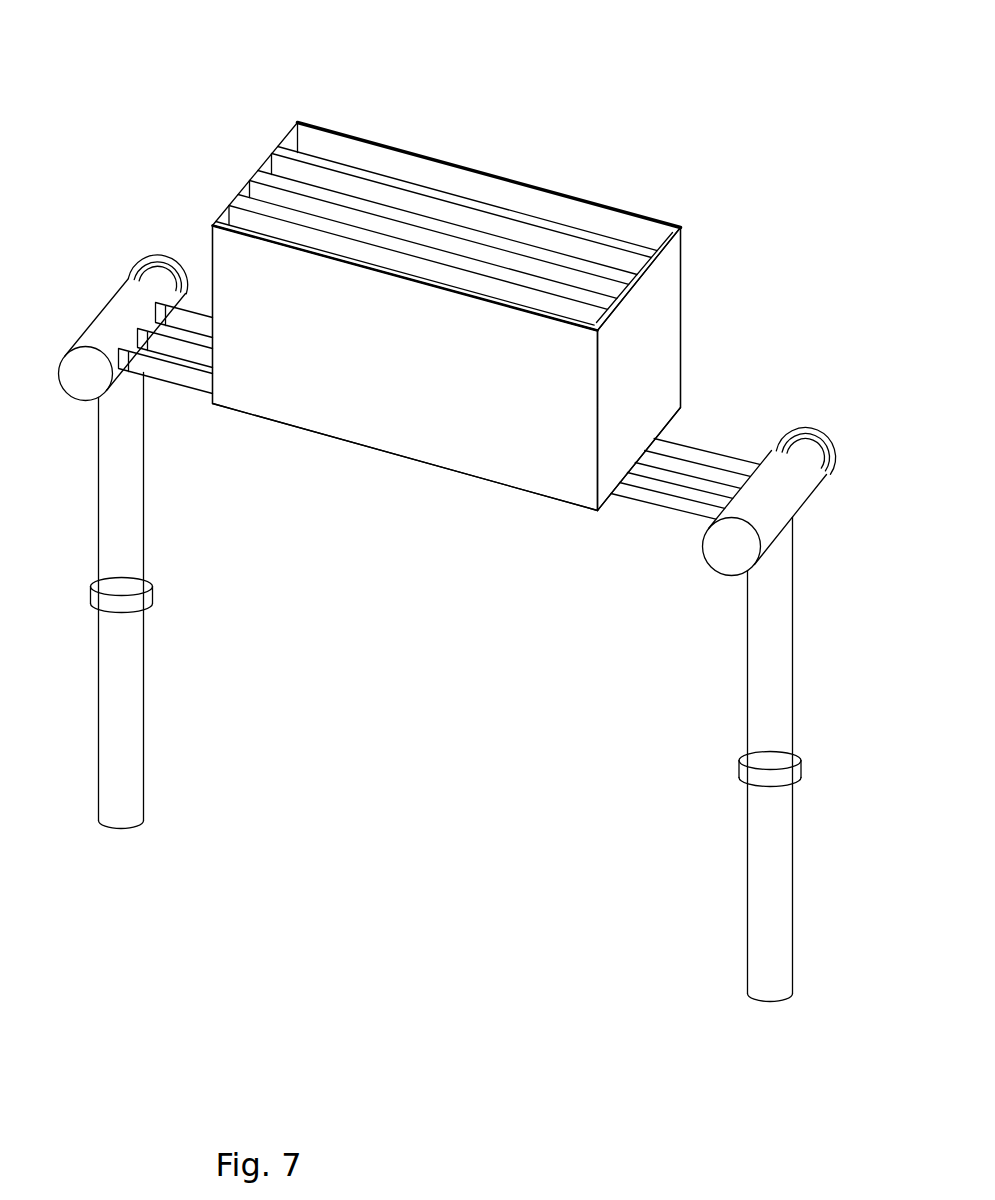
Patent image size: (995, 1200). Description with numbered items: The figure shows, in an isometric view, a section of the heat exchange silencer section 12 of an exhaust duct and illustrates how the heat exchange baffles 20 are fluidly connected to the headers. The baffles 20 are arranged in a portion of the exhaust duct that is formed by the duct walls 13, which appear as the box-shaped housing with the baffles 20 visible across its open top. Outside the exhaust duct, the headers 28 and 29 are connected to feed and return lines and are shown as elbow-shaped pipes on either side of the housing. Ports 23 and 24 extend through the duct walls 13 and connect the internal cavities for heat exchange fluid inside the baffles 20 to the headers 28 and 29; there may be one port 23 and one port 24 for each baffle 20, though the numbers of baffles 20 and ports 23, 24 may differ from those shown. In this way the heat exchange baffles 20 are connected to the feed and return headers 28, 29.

The heat exchange silencer section 12 is at (679, 201).
The duct walls 13 is at (337, 132).
The heat exchange baffles 20 is at (359, 231).
The ports 23 is at (742, 468).
The ports 24 is at (143, 360).
The header 28 is at (787, 478).
The header 29 is at (128, 308).